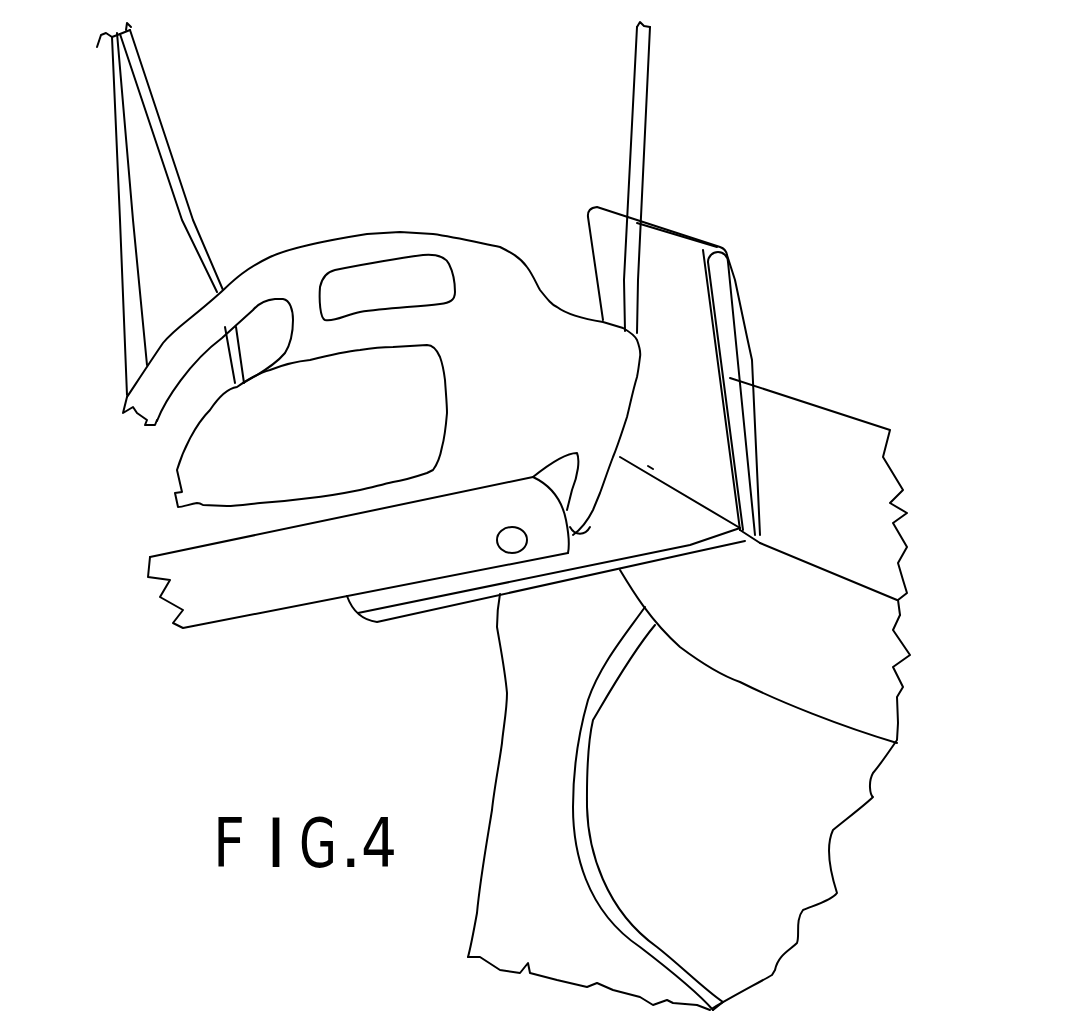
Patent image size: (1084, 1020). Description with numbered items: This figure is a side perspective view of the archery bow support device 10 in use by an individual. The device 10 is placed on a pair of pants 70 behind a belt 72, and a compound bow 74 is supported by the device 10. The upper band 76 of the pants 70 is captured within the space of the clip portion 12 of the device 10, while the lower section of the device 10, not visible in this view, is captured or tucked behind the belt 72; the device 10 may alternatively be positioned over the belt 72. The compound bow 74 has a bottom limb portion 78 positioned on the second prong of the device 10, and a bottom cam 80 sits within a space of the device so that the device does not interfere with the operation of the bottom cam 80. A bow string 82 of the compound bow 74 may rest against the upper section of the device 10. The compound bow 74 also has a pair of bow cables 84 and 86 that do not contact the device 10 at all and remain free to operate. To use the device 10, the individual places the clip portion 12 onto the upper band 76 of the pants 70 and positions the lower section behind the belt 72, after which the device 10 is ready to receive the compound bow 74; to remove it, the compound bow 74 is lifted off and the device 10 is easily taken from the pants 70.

The archery bow support device 10 is at (720, 193).
The clip portion 12 is at (752, 296).
The pants 70 is at (458, 718).
The belt 72 is at (852, 637).
The compound bow 74 is at (295, 186).
The upper band 76 is at (803, 430).
The bottom limb portion 78 is at (267, 592).
The bottom cam 80 is at (488, 296).
The bow string 82 is at (636, 88).
The bow cable 84 is at (113, 130).
The bow cable 86 is at (167, 150).